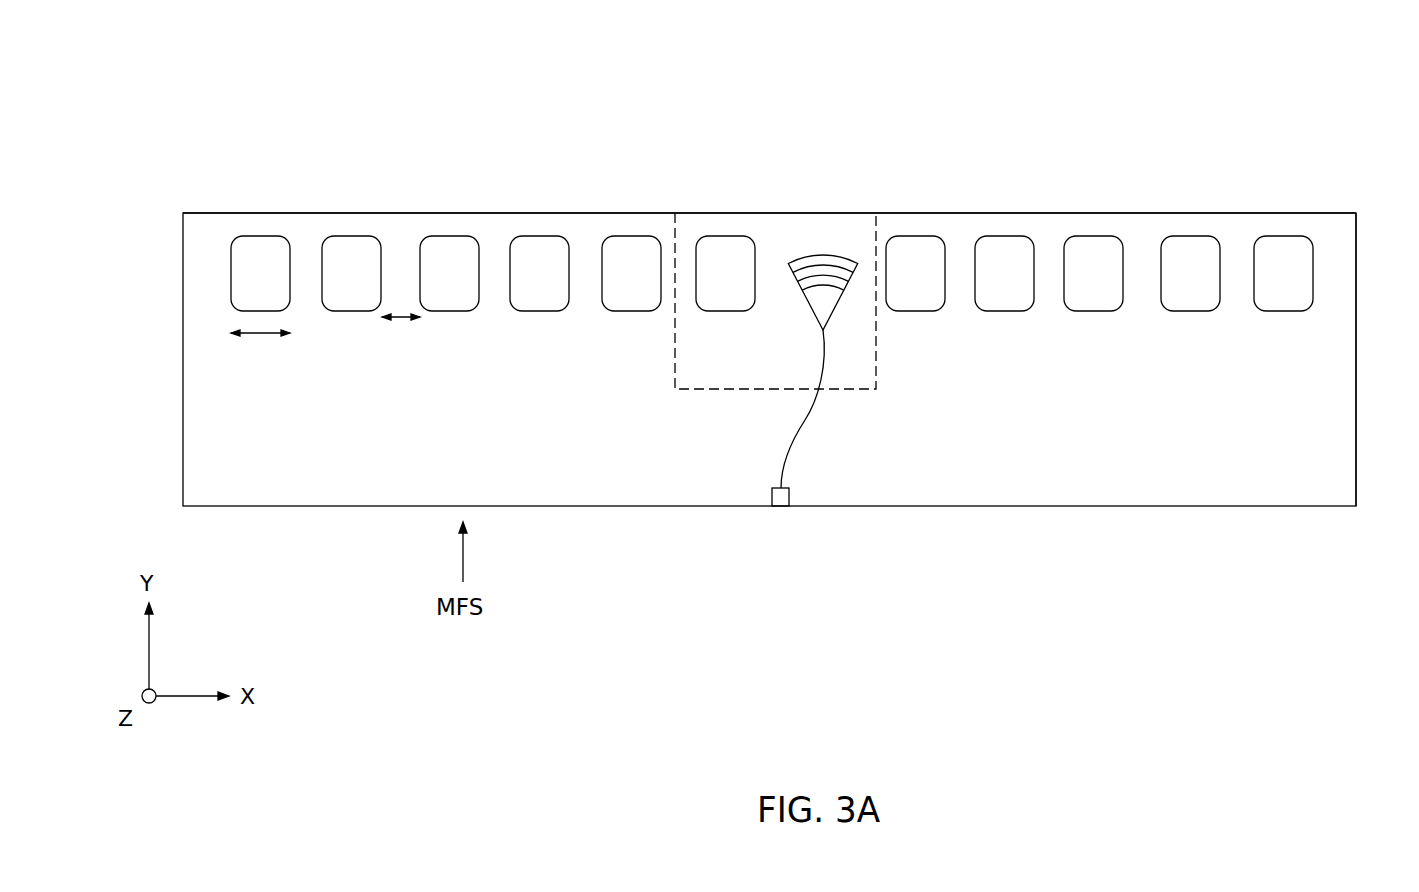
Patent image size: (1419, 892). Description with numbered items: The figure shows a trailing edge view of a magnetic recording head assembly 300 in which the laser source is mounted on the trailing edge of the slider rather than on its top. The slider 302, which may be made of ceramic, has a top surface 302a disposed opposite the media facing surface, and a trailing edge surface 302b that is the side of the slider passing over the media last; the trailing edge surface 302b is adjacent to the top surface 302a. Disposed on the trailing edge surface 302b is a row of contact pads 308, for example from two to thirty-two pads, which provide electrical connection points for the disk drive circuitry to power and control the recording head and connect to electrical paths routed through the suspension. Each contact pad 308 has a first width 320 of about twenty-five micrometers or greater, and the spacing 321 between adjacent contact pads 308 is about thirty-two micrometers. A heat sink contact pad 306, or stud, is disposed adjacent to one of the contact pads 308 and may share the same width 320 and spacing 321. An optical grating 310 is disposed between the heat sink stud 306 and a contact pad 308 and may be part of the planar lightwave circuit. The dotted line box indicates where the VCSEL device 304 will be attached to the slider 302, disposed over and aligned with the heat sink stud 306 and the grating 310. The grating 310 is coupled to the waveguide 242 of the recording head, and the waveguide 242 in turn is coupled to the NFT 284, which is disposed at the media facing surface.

The magnetic recording head assembly 300 is at (215, 82).
The slider 302 is at (384, 452).
The top surface 302a is at (1148, 212).
The trailing edge surface 302b is at (1192, 429).
The VCSEL device 304 is at (675, 327).
The heat sink contact pad 306 is at (715, 297).
The contact pads 308 is at (282, 288).
The optical grating 310 is at (818, 298).
The waveguide 242 is at (803, 418).
The NFT 284 is at (789, 497).
The first width 320 is at (260, 347).
The spacing 321 is at (401, 332).